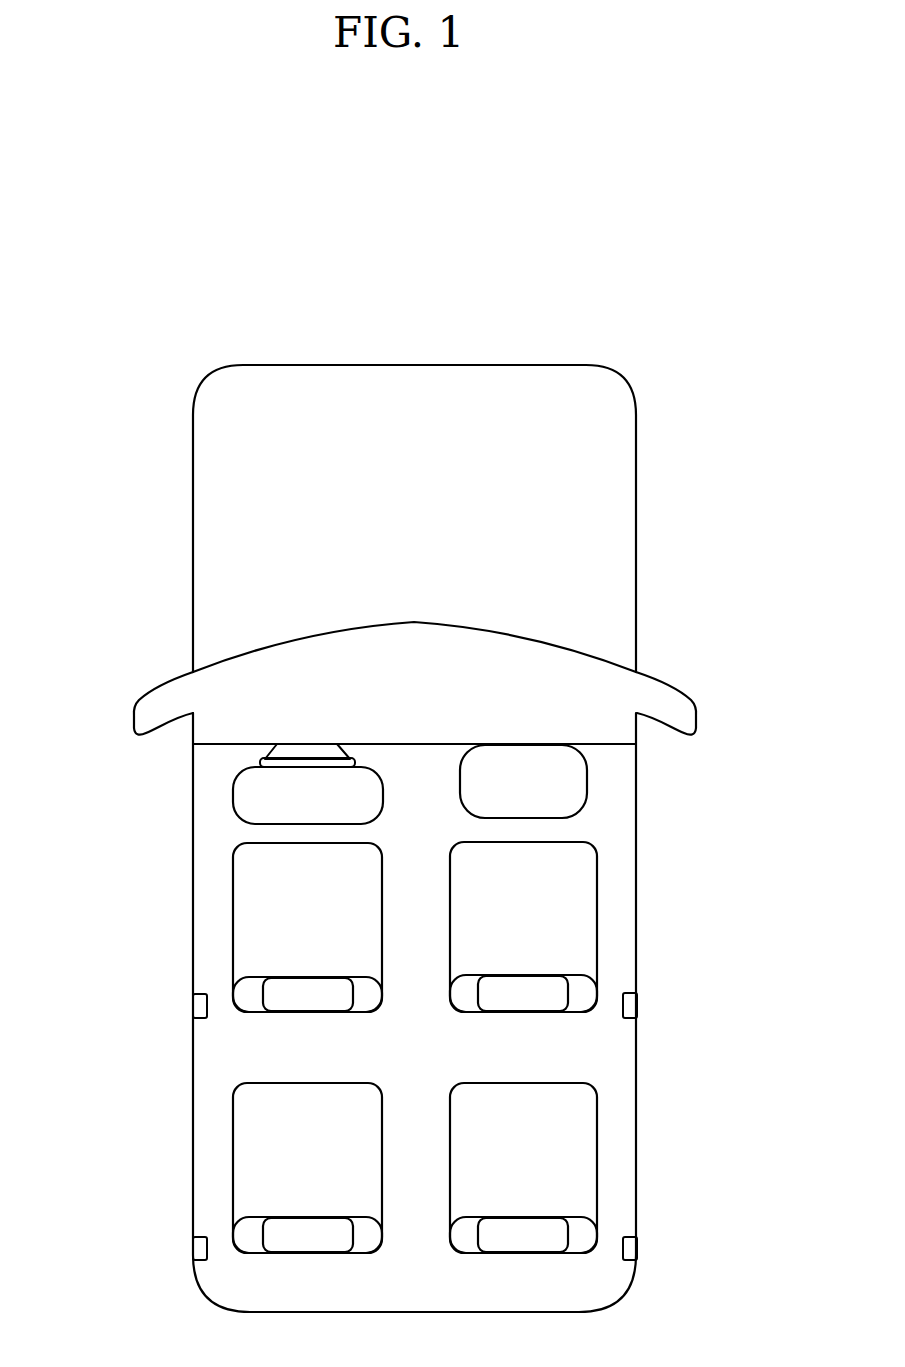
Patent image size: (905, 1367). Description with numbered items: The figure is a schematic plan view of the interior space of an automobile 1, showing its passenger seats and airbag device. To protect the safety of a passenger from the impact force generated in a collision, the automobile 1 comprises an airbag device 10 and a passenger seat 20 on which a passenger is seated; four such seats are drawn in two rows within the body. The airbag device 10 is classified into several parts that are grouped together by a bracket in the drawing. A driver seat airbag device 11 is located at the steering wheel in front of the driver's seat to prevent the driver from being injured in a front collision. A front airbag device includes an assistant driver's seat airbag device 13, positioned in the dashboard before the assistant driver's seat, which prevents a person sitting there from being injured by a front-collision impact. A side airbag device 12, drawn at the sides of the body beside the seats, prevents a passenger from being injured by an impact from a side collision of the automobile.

The automobile 1 is at (148, 305).
The airbag device 10 is at (92, 798).
The driver seat airbag device 11 is at (258, 797).
The side airbag device 12 is at (200, 1007).
The assistant driver's seat airbag device 13 is at (507, 797).
The passenger seat 20 is at (562, 913).